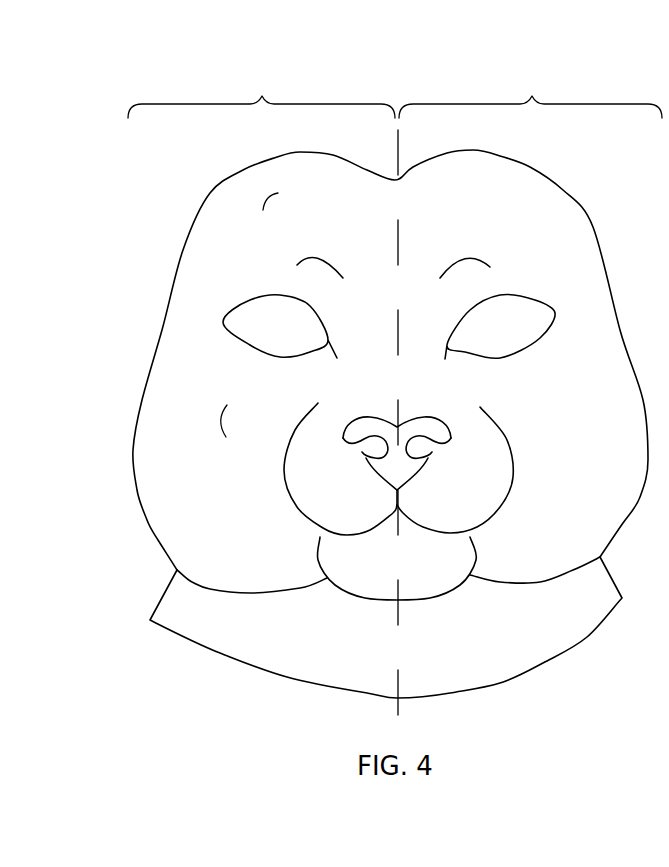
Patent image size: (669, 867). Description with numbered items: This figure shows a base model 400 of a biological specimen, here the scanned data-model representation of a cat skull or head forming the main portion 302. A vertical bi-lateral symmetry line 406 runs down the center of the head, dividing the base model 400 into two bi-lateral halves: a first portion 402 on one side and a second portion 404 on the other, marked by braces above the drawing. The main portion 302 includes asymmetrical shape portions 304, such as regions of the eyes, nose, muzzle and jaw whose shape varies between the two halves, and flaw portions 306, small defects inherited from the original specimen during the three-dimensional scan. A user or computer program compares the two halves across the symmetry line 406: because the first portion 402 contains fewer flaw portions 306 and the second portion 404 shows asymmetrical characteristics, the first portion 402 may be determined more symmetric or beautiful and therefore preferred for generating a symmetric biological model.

The base model 400 is at (410, 62).
The first portion 402 is at (530, 94).
The second portion 404 is at (261, 94).
The bi-lateral symmetry line 406 is at (395, 680).
The main portion 302 is at (340, 155).
The asymmetrical shape portions 304 is at (238, 343).
The flaw portions 306 is at (267, 197).